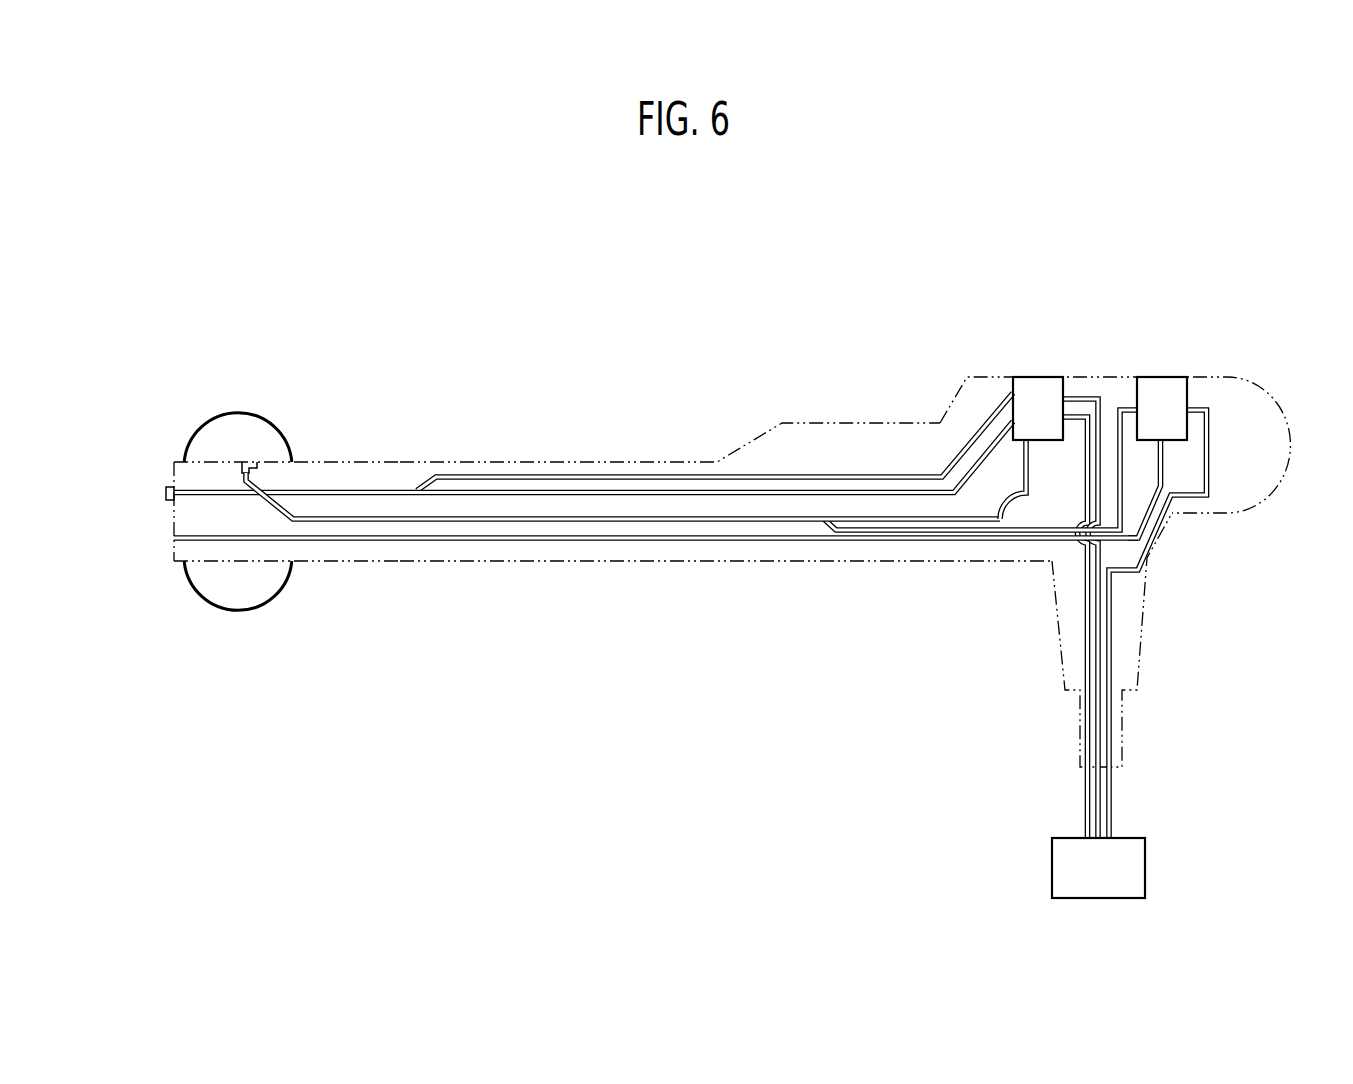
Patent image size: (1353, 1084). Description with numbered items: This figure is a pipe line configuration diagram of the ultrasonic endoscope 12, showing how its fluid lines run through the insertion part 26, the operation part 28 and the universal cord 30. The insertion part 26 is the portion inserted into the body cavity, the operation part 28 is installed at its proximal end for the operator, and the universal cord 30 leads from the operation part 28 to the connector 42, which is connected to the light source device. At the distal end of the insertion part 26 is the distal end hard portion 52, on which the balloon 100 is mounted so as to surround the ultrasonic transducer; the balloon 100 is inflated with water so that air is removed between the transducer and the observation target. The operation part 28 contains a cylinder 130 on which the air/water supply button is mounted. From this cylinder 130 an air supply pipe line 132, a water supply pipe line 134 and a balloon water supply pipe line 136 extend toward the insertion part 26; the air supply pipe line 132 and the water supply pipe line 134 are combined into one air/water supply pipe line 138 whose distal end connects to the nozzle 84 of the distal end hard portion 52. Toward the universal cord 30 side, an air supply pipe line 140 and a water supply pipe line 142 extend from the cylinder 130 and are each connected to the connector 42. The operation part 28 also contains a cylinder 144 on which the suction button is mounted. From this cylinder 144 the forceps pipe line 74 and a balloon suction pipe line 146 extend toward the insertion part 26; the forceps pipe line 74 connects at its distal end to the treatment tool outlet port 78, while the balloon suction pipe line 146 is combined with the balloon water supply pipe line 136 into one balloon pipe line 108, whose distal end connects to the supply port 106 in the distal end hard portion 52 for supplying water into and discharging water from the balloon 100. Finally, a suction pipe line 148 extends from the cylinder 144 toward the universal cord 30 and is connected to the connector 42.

The ultrasonic endoscope 12 is at (909, 336).
The insertion part 26 is at (522, 457).
The operation part 28 is at (1240, 371).
The universal cord 30 is at (1122, 725).
The connector 42 is at (1146, 866).
The distal end hard portion 52 is at (306, 455).
The forceps pipe line 74 is at (1150, 512).
The treatment tool outlet port 78 is at (173, 539).
The nozzle 84 is at (165, 493).
The balloon 100 is at (236, 411).
The supply port 106 is at (249, 462).
The balloon pipe line 108 is at (658, 518).
The cylinder 130 is at (1035, 388).
The air supply pipe line 132 is at (873, 491).
The water supply pipe line 134 is at (805, 477).
The balloon water supply pipe line 136 is at (1028, 480).
The air/water supply pipe line 138 is at (375, 491).
The air supply pipe line 140 is at (1086, 617).
The water supply pipe line 142 is at (1097, 648).
The cylinder 144 is at (1167, 388).
The balloon suction pipe line 146 is at (1117, 424).
The suction pipe line 148 is at (1209, 449).